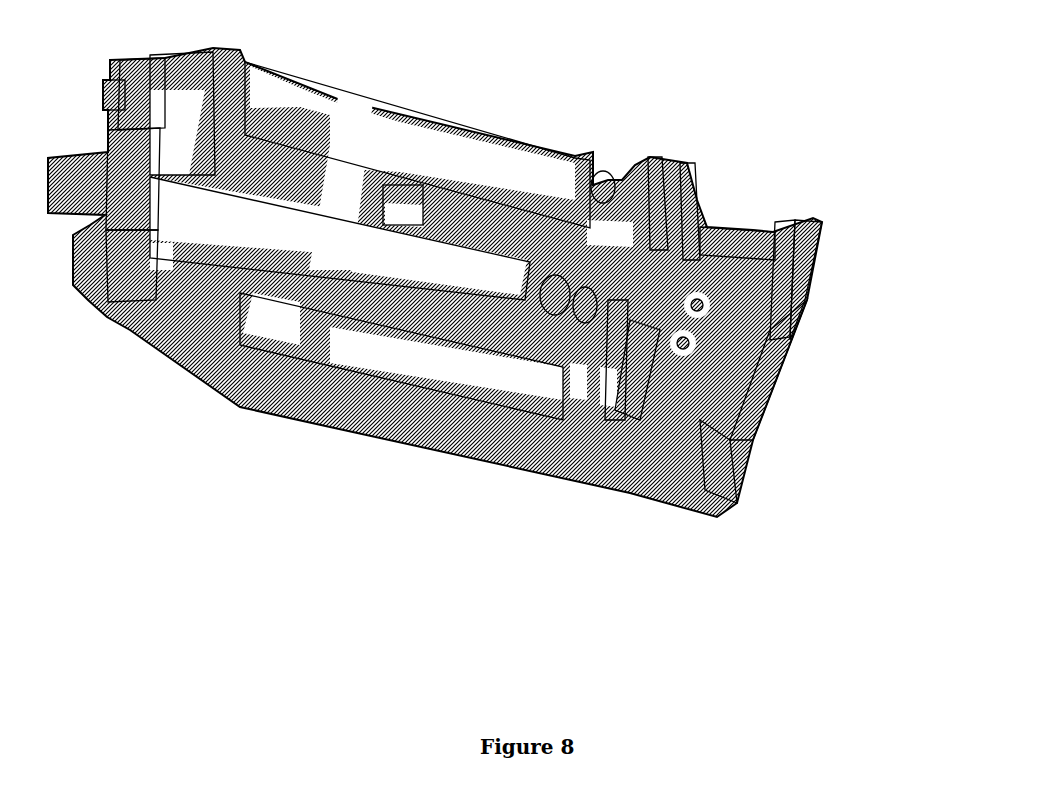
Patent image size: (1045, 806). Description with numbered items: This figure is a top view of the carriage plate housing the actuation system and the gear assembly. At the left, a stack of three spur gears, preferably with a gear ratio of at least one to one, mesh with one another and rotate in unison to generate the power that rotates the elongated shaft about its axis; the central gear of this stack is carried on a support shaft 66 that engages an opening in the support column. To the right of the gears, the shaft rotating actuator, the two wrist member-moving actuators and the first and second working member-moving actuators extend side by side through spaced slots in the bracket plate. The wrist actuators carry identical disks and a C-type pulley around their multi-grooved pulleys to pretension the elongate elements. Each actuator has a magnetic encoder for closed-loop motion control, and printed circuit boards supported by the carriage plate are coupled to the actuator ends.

The support shaft 66 is at (173, 147).